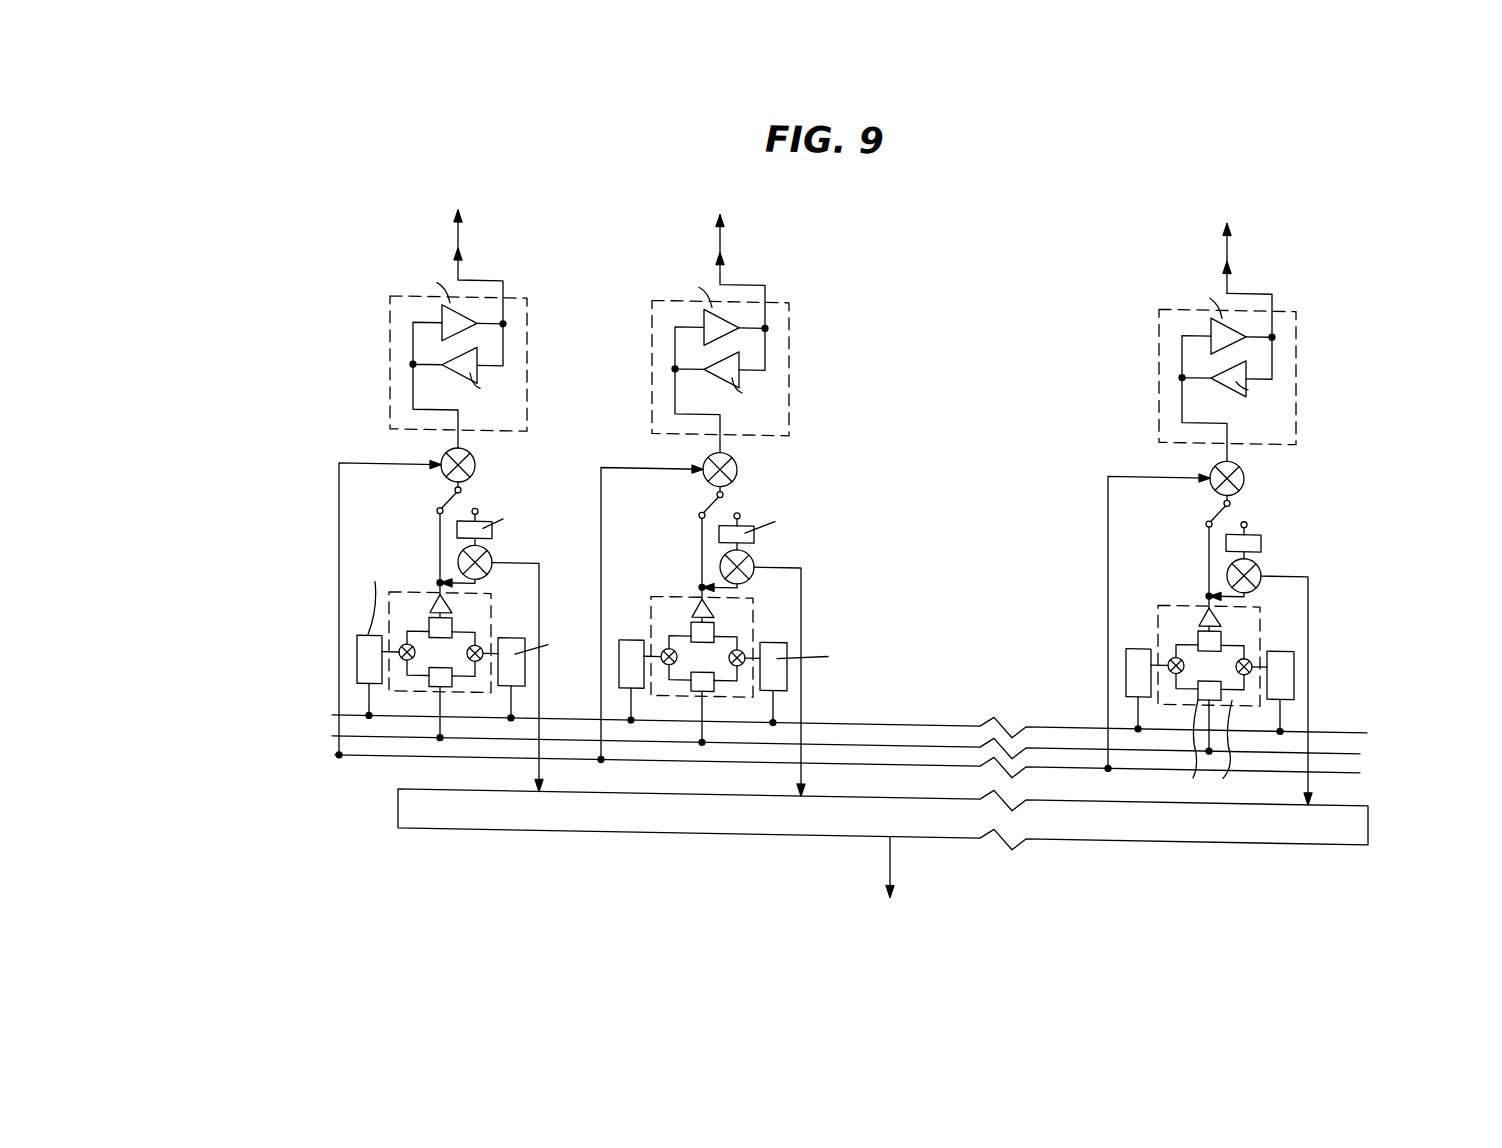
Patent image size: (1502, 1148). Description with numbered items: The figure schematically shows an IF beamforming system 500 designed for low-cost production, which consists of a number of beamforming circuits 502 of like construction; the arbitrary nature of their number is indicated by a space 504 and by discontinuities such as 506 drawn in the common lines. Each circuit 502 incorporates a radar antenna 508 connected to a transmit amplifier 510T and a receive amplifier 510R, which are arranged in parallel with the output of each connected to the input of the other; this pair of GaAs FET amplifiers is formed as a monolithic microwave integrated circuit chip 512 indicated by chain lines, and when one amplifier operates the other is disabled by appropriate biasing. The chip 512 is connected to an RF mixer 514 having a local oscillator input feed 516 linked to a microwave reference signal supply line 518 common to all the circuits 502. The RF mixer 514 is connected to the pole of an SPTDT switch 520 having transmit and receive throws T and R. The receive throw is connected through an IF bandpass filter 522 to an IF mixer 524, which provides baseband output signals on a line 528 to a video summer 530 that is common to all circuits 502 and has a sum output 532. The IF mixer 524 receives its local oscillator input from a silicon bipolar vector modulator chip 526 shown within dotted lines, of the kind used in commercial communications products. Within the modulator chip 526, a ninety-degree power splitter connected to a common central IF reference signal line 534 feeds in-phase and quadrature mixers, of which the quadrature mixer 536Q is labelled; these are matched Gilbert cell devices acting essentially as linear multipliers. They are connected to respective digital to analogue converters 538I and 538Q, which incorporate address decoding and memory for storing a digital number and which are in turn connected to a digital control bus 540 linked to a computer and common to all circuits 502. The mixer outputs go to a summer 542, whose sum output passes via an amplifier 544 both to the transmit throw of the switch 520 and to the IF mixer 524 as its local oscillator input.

The IF beamforming system 500 is at (1122, 835).
The beamforming circuit 502 is at (333, 499).
The space 504 is at (990, 658).
The discontinuity 506 is at (1005, 712).
The radar antenna 508 is at (1230, 227).
The transmit amplifier 510T is at (1205, 327).
The receive amplifier 510R is at (1240, 385).
The monolithic microwave integrated circuit chip 512 is at (1296, 332).
The RF mixer 514 is at (1246, 464).
The local oscillator input feed 516 is at (1107, 499).
The microwave reference signal supply line 518 is at (1360, 757).
The SPTDT switch 520 is at (1213, 505).
The IF bandpass filter 522 is at (1310, 475).
The IF mixer 524 is at (1260, 556).
The silicon bipolar vector modulator chip 526 is at (1258, 614).
The line 528 is at (1308, 707).
The video summer 530 is at (1368, 810).
The sum output 532 is at (893, 851).
The central IF reference signal line 534 is at (1360, 738).
The quadrature mixer 536Q is at (1168, 650).
The in-phase digital to analogue converter 538I is at (1290, 655).
The quadrature digital to analogue converter 538Q is at (1130, 661).
The digital control bus 540 is at (1367, 717).
The summer 542 is at (1225, 622).
The amplifier 544 is at (1205, 600).